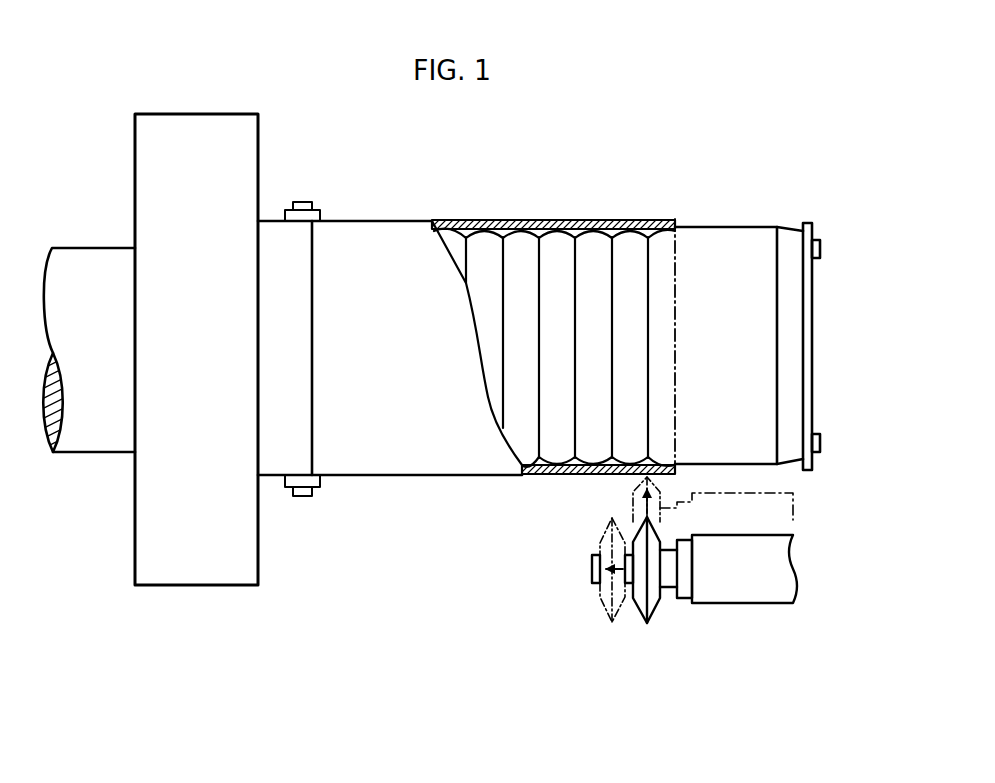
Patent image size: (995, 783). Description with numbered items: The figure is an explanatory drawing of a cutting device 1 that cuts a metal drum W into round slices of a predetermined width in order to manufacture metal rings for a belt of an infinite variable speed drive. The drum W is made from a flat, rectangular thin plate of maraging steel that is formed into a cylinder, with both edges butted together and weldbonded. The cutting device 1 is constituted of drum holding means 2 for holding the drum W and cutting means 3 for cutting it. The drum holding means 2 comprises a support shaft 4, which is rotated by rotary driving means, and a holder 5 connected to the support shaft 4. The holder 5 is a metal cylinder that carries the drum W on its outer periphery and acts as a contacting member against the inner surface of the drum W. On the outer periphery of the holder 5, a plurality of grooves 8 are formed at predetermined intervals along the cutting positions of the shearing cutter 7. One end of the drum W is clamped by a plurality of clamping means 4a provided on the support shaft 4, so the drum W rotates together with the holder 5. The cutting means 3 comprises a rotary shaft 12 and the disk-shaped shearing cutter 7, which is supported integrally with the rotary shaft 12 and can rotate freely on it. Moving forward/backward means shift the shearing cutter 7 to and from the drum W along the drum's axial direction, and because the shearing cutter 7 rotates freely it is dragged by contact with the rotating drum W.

The cutting device 1 is at (780, 160).
The drum holding means 2 is at (344, 176).
The cutting means 3 is at (723, 628).
The support shaft 4 is at (276, 234).
The clamping means 4a is at (318, 207).
The holder 5 is at (721, 248).
The shearing cutter 7 is at (632, 496).
The grooves 8 is at (503, 233).
The rotary shaft 12 is at (669, 578).
The drum W is at (395, 240).